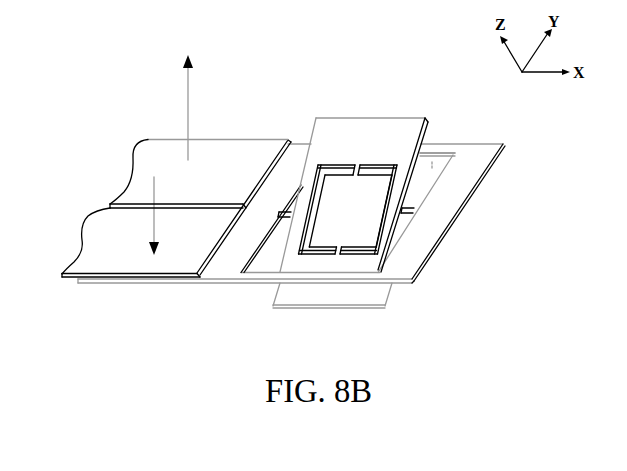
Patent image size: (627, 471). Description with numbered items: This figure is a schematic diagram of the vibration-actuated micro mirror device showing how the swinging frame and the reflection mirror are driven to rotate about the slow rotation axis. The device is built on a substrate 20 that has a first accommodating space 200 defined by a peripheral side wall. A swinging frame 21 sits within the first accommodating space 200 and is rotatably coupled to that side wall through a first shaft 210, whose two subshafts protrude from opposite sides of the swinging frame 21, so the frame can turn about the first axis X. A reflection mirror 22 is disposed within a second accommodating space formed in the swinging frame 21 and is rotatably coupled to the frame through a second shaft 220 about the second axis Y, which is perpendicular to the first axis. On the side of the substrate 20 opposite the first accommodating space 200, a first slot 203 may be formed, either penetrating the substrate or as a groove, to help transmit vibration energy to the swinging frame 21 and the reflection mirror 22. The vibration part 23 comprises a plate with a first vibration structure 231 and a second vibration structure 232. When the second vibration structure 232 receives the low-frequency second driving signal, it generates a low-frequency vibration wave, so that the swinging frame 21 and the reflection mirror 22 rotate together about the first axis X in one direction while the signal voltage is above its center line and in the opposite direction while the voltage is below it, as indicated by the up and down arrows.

The substrate 20 is at (506, 137).
The swinging frame 21 is at (380, 128).
The reflection mirror 22 is at (367, 232).
The vibration part 23 is at (171, 166).
The first accommodating space 200 is at (433, 160).
The first slot 203 is at (333, 168).
The first shaft 210 is at (289, 220).
The second shaft 220 is at (333, 250).
The first vibration structure 231 is at (250, 142).
The second vibration structure 232 is at (95, 242).